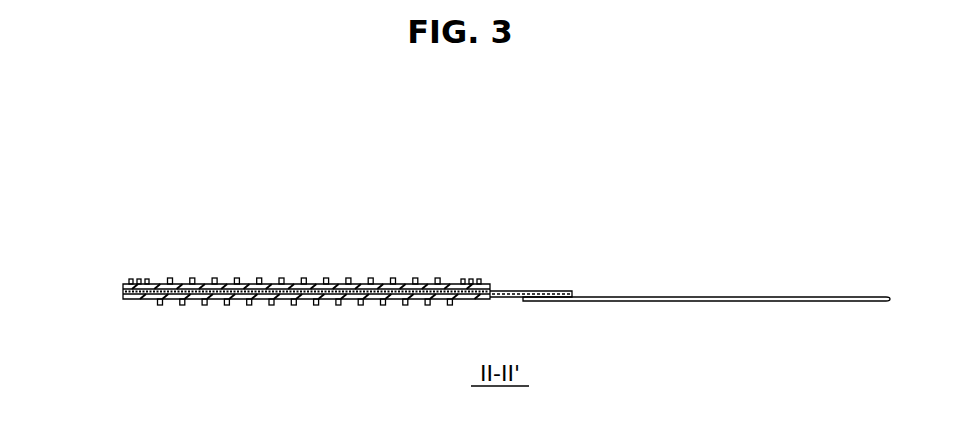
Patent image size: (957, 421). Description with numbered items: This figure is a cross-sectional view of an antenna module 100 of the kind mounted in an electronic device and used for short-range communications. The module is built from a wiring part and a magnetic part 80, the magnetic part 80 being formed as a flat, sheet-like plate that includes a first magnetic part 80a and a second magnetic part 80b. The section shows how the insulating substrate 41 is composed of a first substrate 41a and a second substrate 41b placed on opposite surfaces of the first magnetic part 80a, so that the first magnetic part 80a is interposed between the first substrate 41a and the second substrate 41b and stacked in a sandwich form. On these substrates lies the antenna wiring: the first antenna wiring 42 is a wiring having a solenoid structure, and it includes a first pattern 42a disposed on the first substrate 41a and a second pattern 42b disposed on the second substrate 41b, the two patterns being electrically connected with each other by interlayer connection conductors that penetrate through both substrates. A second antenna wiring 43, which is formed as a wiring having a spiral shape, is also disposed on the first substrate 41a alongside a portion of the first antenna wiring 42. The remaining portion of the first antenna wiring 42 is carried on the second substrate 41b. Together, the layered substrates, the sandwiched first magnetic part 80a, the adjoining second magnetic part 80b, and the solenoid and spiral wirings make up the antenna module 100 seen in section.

The antenna module 100 is at (275, 197).
The insulating substrate 41 is at (62, 273).
The first substrate 41a is at (123, 287).
The second substrate 41b is at (123, 297).
The first antenna wiring 42 is at (211, 221).
The first pattern 42a is at (215, 278).
The second pattern 42b is at (250, 286).
The second antenna wiring 43 is at (140, 278).
The magnetic part 80 is at (568, 236).
The first magnetic part 80a is at (553, 291).
The second magnetic part 80b is at (610, 297).